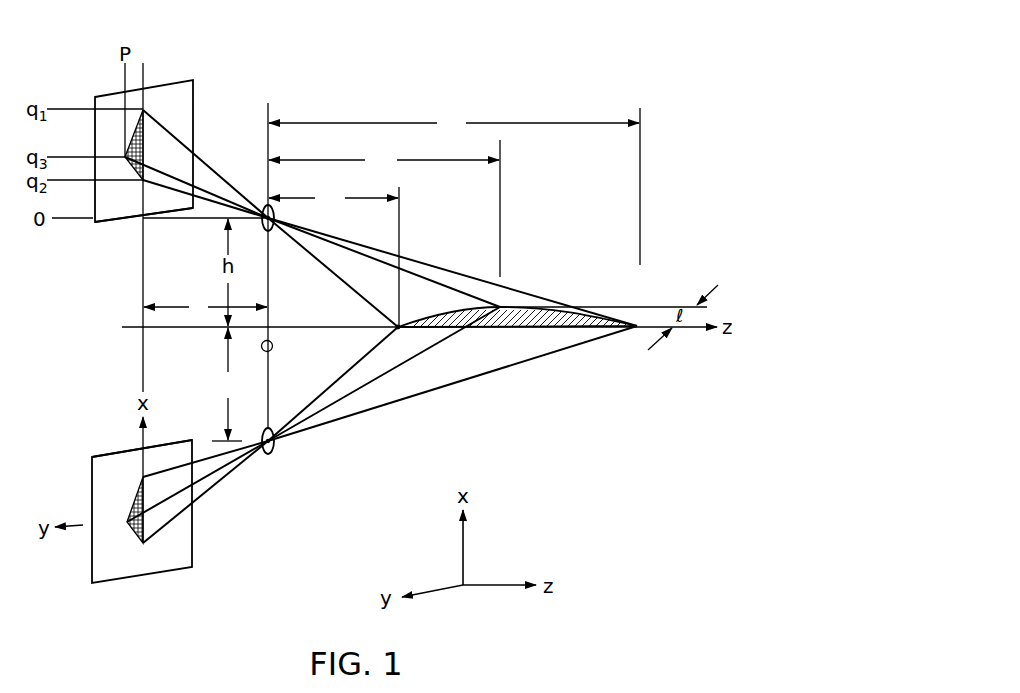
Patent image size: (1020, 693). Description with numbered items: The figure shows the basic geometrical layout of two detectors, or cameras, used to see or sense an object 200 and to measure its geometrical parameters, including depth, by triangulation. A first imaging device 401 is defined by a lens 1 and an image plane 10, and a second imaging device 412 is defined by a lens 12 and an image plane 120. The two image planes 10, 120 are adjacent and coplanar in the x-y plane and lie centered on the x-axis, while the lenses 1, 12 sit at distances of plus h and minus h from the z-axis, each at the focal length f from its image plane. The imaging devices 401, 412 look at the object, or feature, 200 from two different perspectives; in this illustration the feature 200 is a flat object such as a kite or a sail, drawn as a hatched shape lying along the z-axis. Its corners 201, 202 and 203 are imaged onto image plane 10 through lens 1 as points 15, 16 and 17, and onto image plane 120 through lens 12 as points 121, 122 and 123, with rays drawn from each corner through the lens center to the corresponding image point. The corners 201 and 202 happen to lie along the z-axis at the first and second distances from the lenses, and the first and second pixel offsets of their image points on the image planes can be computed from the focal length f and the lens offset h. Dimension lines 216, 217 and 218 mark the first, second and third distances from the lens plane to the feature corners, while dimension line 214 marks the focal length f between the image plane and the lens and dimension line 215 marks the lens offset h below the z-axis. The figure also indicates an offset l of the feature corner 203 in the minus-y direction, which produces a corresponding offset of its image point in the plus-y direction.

The lens 1 is at (275, 232).
The image plane 10 is at (177, 90).
The lens 12 is at (277, 452).
The image point 15 is at (143, 110).
The image point 16 is at (143, 180).
The image point 17 is at (125, 157).
The image plane 120 is at (187, 545).
The image point 121 is at (143, 543).
The image point 122 is at (143, 477).
The image point 123 is at (127, 522).
The object 200 is at (517, 329).
The corner 201 is at (400, 329).
The corner 202 is at (636, 326).
The corner 203 is at (497, 306).
The focal length f 214 is at (197, 297).
The lens offset h 215 is at (219, 383).
The distance d1 216 is at (331, 212).
The distance d2 217 is at (455, 118).
The distance d3 218 is at (396, 171).
The first imaging device 401 is at (113, 228).
The second imaging device 412 is at (125, 435).